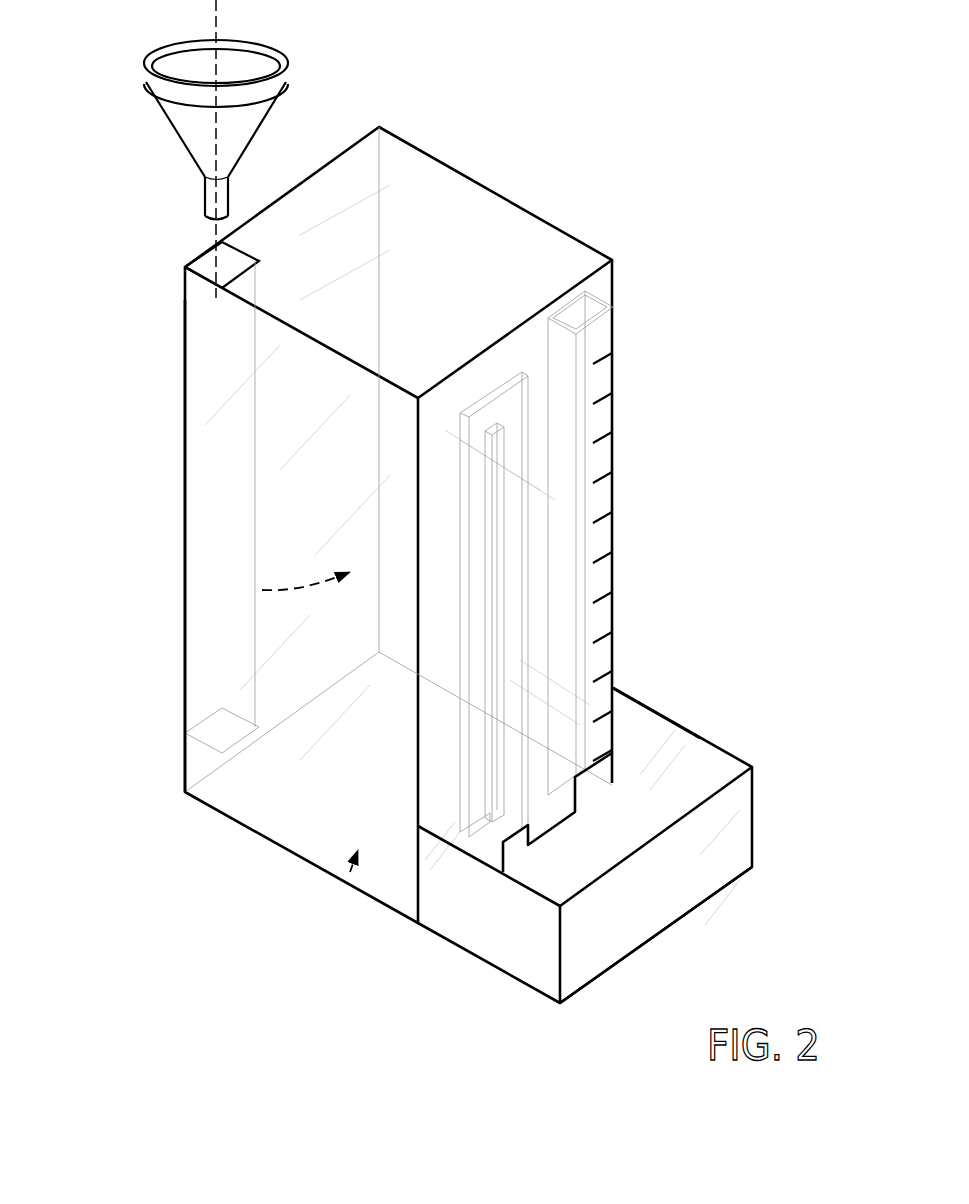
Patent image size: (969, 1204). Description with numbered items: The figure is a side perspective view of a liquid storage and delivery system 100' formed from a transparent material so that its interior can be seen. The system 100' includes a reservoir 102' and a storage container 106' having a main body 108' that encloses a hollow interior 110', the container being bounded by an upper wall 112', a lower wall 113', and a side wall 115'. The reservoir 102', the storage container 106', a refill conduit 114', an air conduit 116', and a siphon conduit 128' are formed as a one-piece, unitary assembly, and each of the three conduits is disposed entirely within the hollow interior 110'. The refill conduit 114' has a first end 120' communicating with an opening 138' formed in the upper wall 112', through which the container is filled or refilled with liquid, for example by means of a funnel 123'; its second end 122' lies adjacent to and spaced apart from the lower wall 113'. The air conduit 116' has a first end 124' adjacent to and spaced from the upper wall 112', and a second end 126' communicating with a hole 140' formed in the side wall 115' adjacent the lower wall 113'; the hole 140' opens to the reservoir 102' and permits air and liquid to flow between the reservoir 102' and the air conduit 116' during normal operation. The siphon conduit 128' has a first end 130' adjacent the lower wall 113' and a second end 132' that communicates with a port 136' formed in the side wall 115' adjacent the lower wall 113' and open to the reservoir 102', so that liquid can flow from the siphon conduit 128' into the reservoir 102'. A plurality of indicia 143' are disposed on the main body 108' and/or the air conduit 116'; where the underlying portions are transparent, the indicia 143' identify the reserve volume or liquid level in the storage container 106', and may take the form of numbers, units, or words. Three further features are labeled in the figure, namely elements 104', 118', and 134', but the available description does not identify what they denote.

The liquid storage and delivery system 100' is at (475, 463).
The reservoir 102' is at (637, 845).
The base side wall 104' is at (696, 906).
The storage container 106' is at (229, 749).
The main body 108' is at (232, 450).
The hollow interior 110' is at (212, 552).
The upper wall 112' is at (404, 180).
The lower wall 113' is at (294, 912).
The refill conduit 114' is at (130, 546).
The side wall 115' is at (628, 458).
The air conduit 116' is at (580, 464).
The lower chamber 118' is at (362, 768).
The first end of refill conduit 120' is at (165, 494).
The second end of refill conduit 122' is at (154, 738).
The funnel 123' is at (259, 130).
The first end of air conduit 124' is at (632, 527).
The second end of air conduit 126' is at (689, 698).
The siphon conduit 128' is at (321, 865).
The first end of siphon conduit 130' is at (386, 874).
The second end of siphon conduit 132' is at (512, 734).
The slot plate 134' is at (529, 493).
The port 136' is at (481, 868).
The opening 138' is at (188, 149).
The hole 140' is at (695, 745).
The indicia 143' is at (668, 648).